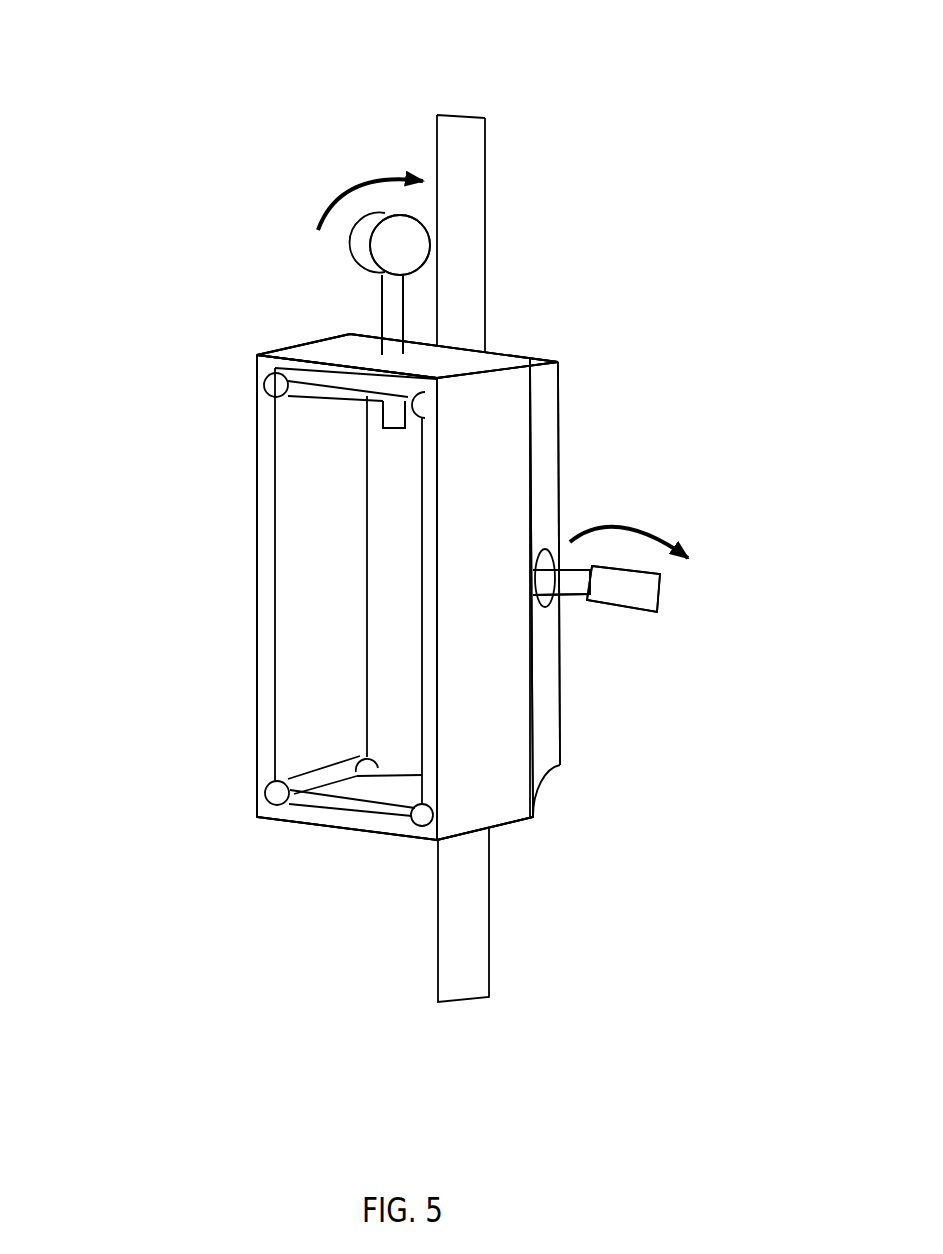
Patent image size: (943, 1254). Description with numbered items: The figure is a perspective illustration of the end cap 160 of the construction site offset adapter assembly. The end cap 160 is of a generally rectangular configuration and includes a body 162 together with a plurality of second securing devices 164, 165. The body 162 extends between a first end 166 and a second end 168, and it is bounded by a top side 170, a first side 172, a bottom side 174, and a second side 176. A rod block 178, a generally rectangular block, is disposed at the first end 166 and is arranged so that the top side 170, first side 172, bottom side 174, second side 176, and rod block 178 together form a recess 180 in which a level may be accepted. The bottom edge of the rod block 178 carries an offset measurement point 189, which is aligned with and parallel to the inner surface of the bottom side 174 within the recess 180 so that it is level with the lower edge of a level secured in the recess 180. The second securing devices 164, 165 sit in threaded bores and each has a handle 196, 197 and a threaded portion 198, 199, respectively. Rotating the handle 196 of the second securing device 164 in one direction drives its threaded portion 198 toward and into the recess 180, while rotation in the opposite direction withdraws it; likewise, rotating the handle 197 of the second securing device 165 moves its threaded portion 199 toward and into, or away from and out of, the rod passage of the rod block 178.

The end cap 160 is at (118, 157).
The body 162 is at (168, 305).
The second securing device 164 is at (315, 185).
The second securing device 165 is at (727, 618).
The first end 166 is at (498, 352).
The second end 168 is at (267, 552).
The top side 170 is at (345, 355).
The first side 172 is at (483, 420).
The bottom side 174 is at (357, 832).
The second side 176 is at (258, 653).
The rod block 178 is at (548, 452).
The recess 180 is at (312, 493).
The offset measurement point 189 is at (562, 768).
The handle 196 is at (632, 590).
The handle 197 is at (405, 247).
The threaded portion 198 is at (563, 585).
The threaded portion 199 is at (395, 305).